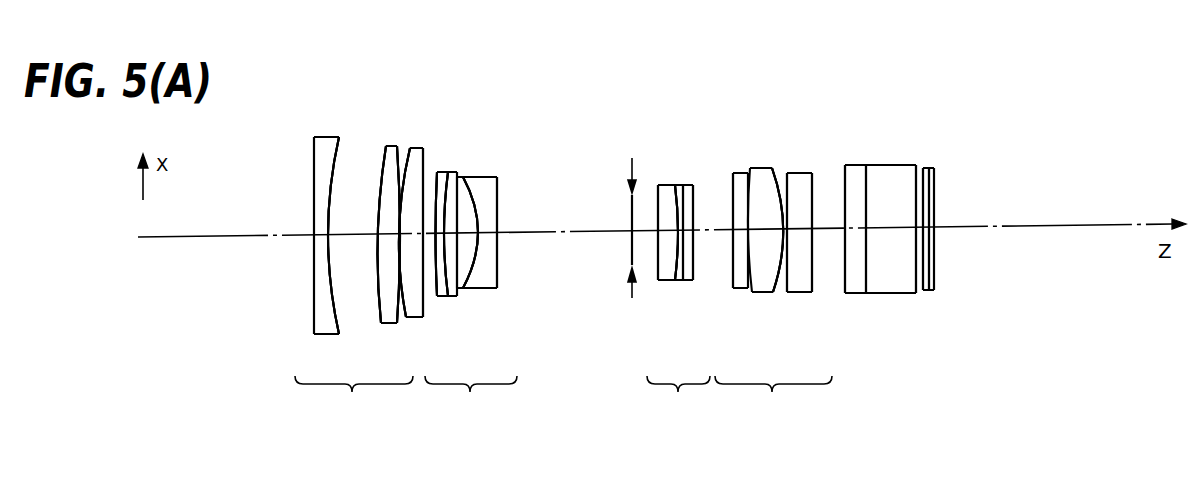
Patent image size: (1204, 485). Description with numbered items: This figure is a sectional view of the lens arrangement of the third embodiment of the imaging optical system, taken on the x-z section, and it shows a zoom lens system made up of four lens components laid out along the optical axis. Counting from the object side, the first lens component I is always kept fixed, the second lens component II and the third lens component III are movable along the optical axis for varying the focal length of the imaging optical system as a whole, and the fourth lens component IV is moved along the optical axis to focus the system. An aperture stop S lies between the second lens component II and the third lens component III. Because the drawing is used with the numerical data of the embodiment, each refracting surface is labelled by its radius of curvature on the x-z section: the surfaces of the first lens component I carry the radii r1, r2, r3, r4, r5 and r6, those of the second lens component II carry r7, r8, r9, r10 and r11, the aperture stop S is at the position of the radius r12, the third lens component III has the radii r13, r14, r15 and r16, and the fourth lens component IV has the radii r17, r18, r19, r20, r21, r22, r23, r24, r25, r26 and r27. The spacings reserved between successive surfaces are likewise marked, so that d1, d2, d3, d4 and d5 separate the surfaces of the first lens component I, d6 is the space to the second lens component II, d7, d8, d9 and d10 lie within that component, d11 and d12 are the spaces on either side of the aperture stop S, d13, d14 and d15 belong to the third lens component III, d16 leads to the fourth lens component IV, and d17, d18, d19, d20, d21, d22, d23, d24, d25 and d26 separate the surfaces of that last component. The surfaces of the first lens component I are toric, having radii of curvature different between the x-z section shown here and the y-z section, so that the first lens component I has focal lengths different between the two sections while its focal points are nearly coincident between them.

The radius of curvature on the first surface r1 is at (313, 170).
The radius of curvature on the second surface r2 is at (339, 168).
The radius of curvature on the third surface r3 is at (383, 172).
The radius of curvature on the fourth surface r4 is at (398, 178).
The radius of curvature on the fifth surface r5 is at (404, 180).
The radius of curvature on the sixth surface r6 is at (424, 160).
The radius of curvature on the seventh surface r7 is at (437, 173).
The radius of curvature on the eighth surface r8 is at (448, 180).
The radius of curvature on the ninth surface r9 is at (459, 185).
The radius of curvature on the tenth surface r10 is at (479, 192).
The radius of curvature on the eleventh surface r11 is at (498, 202).
The radius of curvature on the twelfth surface r12 is at (632, 170).
The radius of curvature on the thirteenth surface r13 is at (657, 190).
The radius of curvature on the fourteenth surface r14 is at (678, 195).
The radius of curvature on the fifteenth surface r15 is at (683, 200).
The radius of curvature on the sixteenth surface r16 is at (694, 190).
The radius of curvature on the seventeenth surface r17 is at (733, 180).
The radius of curvature on the eighteenth surface r18 is at (749, 185).
The radius of curvature on the nineteenth surface r19 is at (784, 200).
The radius of curvature on the twentieth surface r20 is at (788, 185).
The radius of curvature on the twenty-first surface r21 is at (813, 190).
The radius of curvature on the twenty-second surface r22 is at (845, 182).
The radius of curvature on the twenty-third surface r23 is at (866, 190).
The radius of curvature on the twenty-fourth surface r24 is at (916, 178).
The radius of curvature on the twenty-fifth surface r25 is at (923, 172).
The radius of curvature on the twenty-sixth surface r26 is at (930, 172).
The radius of curvature on the twenty-seventh surface r27 is at (935, 185).
The airspace between the first and second surfaces d1 is at (321, 252).
The airspace between the second and third surfaces d2 is at (345, 248).
The airspace between the third and fourth surfaces d3 is at (389, 248).
The airspace between the fourth and fifth surfaces d4 is at (400, 250).
The airspace between the fifth and sixth surfaces d5 is at (411, 248).
The airspace between the sixth and seventh surfaces d6 is at (430, 250).
The airspace between the seventh and eighth surfaces d7 is at (440, 250).
The airspace between the eighth and ninth surfaces d8 is at (451, 250).
The airspace between the ninth and tenth surfaces d9 is at (469, 248).
The airspace between the tenth and eleventh surfaces d10 is at (489, 248).
The airspace between the eleventh and twelfth surfaces d11 is at (567, 243).
The airspace between the twelfth and thirteenth surfaces d12 is at (640, 248).
The airspace between the thirteenth and fourteenth surfaces d13 is at (667, 245).
The airspace between the fourteenth and fifteenth surfaces d14 is at (679, 246).
The airspace between the fifteenth and sixteenth surfaces d15 is at (688, 245).
The airspace between the sixteenth and seventeenth surfaces d16 is at (713, 245).
The airspace between the seventeenth and eighteenth surfaces d17 is at (740, 245).
The airspace between the eighteenth and nineteenth surfaces d18 is at (765, 245).
The airspace between the nineteenth and twentieth surfaces d19 is at (785, 245).
The airspace between the twentieth and twenty-first surfaces d20 is at (800, 245).
The airspace between the twenty-first and twenty-second surfaces d21 is at (828, 243).
The airspace between the twenty-second and twenty-third surfaces d22 is at (855, 243).
The airspace between the twenty-third and twenty-fourth surfaces d23 is at (890, 243).
The airspace between the twenty-fourth and twenty-fifth surfaces d24 is at (920, 243).
The airspace between the twenty-fifth and twenty-sixth surfaces d25 is at (926, 242).
The airspace between the twenty-sixth and twenty-seventh surfaces d26 is at (933, 242).
The aperture stop S is at (632, 210).
The first lens component I is at (351, 413).
The second lens component II is at (472, 412).
The third lens component III is at (686, 411).
The fourth lens component IV is at (775, 411).